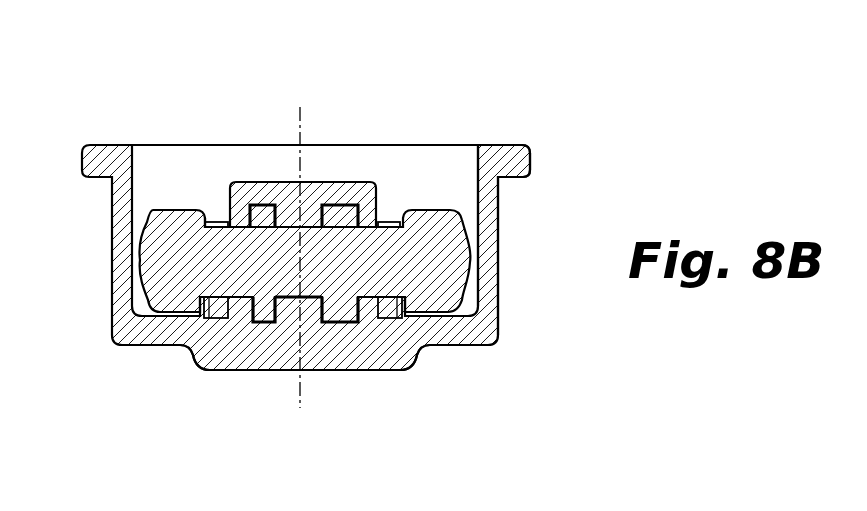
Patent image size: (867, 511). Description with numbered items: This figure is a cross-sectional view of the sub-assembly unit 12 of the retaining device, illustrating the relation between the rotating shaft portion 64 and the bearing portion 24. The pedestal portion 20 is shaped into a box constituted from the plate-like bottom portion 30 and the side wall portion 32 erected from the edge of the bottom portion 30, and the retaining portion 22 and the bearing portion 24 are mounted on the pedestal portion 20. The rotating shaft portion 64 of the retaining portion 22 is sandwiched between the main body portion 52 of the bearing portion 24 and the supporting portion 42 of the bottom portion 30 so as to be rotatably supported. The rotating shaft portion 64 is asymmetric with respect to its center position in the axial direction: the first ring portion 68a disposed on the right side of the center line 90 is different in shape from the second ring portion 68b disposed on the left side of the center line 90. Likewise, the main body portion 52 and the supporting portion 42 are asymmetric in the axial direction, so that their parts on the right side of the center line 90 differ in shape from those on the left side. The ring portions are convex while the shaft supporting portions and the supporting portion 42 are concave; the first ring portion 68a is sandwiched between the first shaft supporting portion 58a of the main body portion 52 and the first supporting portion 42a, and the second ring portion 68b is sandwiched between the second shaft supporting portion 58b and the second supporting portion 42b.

The sub-assembly unit 12 is at (283, 421).
The pedestal portion 20 is at (92, 143).
The retaining portion 22 is at (175, 206).
The bearing portion 24 is at (229, 202).
The bottom portion 30 is at (433, 347).
The side wall portion 32 is at (488, 219).
The supporting portion 42 is at (310, 372).
The first supporting portion 42a is at (313, 308).
The second supporting portion 42b is at (258, 323).
The main body portion 52 is at (318, 183).
The first shaft supporting portion 58a is at (342, 204).
The second shaft supporting portion 58b is at (258, 204).
The rotating shaft portion 64 is at (390, 220).
The first ring portion 68a is at (350, 215).
The second ring portion 68b is at (258, 226).
The center line 90 is at (302, 108).